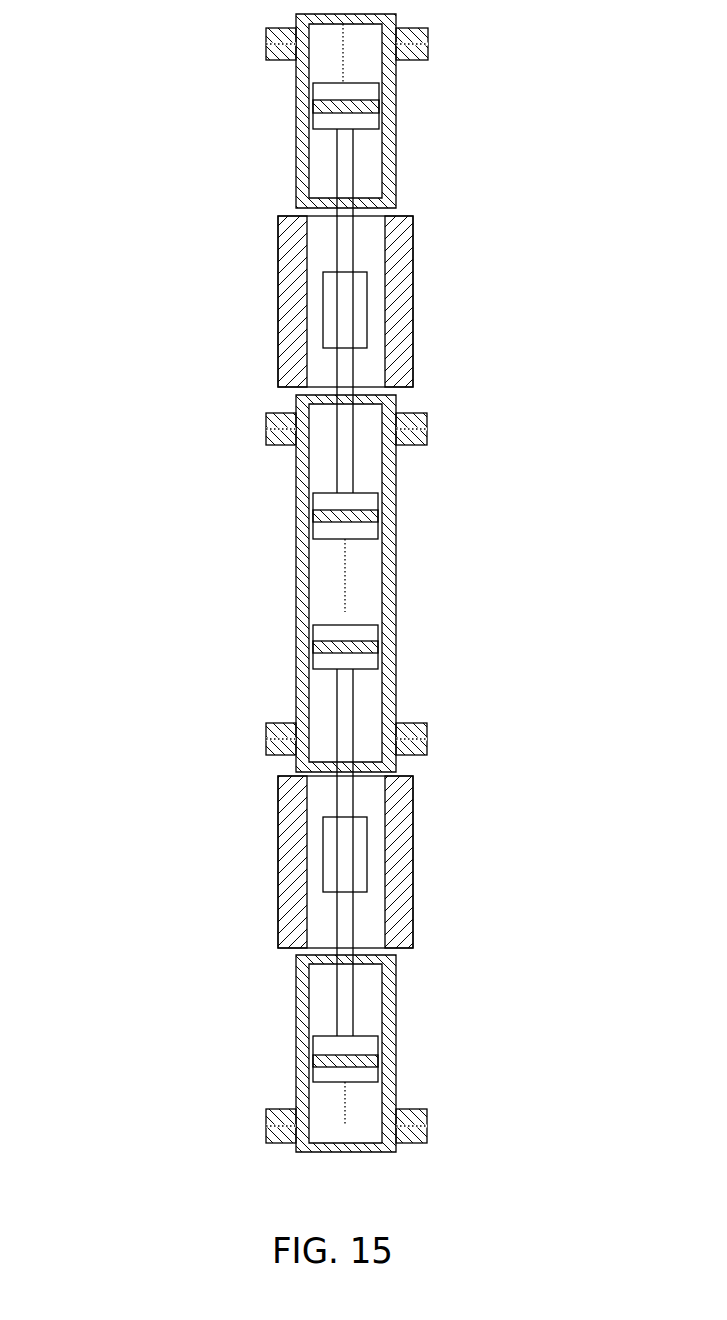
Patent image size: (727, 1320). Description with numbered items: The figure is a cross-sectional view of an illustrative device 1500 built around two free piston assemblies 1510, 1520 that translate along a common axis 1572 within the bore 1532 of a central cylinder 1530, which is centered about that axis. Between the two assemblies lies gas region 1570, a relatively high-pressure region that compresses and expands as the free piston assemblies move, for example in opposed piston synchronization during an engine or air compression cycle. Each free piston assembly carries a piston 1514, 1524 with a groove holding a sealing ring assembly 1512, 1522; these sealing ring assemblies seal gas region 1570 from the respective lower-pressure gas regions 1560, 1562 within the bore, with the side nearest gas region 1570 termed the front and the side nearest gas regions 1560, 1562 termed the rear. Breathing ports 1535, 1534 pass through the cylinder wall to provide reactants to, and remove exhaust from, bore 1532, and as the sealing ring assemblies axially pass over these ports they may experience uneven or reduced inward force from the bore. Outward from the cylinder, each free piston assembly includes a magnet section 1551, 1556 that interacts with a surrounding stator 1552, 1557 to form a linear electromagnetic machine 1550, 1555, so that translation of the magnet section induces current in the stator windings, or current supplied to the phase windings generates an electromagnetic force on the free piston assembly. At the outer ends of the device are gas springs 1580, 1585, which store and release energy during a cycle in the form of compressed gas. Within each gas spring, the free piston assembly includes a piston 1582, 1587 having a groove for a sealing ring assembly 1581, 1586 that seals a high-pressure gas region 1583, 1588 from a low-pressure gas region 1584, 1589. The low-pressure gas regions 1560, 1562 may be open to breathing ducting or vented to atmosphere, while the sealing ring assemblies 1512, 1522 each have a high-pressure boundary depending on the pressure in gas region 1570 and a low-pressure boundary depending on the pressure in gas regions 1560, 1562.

The device 1500 is at (83, 141).
The free piston assembly 1510 is at (325, 263).
The sealing ring assembly 1512 is at (396, 512).
The piston 1514 is at (296, 542).
The free piston assembly 1520 is at (325, 928).
The sealing ring assembly 1522 is at (396, 640).
The piston 1524 is at (320, 632).
The cylinder 1530 is at (396, 585).
The bore 1532 is at (326, 557).
The breathing port 1534 is at (250, 745).
The breathing port 1535 is at (250, 430).
The linear electromagnetic machine 1550 is at (512, 216).
The magnet section 1551 is at (332, 320).
The stator 1552 is at (278, 366).
The linear electromagnetic machine 1555 is at (512, 776).
The magnet section 1556 is at (332, 852).
The stator 1557 is at (278, 880).
The gas region 1560 is at (314, 456).
The gas region 1562 is at (314, 698).
The gas region 1570 is at (326, 597).
The axis 1572 is at (348, 1097).
The gas spring 1580 is at (512, 12).
The sealing ring assembly 1581 is at (396, 100).
The piston 1582 is at (396, 125).
The gas region 1583 is at (312, 72).
The gas region 1584 is at (315, 166).
The gas spring 1585 is at (521, 965).
The sealing ring assembly 1586 is at (396, 1055).
The piston 1587 is at (296, 1045).
The gas region 1588 is at (318, 1128).
The gas region 1589 is at (314, 984).